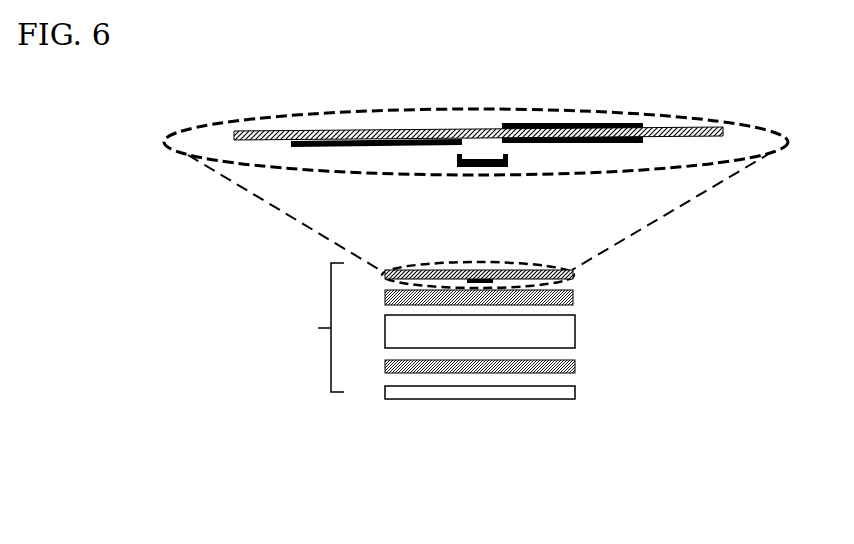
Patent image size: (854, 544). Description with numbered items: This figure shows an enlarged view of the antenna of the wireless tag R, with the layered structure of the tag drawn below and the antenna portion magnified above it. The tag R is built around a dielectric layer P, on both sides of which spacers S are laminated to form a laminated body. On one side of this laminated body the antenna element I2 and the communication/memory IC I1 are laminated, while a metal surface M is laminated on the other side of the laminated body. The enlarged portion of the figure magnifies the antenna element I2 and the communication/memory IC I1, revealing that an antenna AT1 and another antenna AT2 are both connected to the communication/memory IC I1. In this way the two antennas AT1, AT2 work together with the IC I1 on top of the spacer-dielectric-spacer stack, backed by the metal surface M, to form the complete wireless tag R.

The antenna AT1 is at (597, 126).
The another antenna AT2 is at (362, 137).
The communication/memory IC I1 is at (485, 167).
The antenna element I2 is at (573, 276).
The spacer S is at (573, 299).
The dielectric layer P is at (565, 341).
The metal surface M is at (565, 395).
The wireless tag R is at (315, 327).